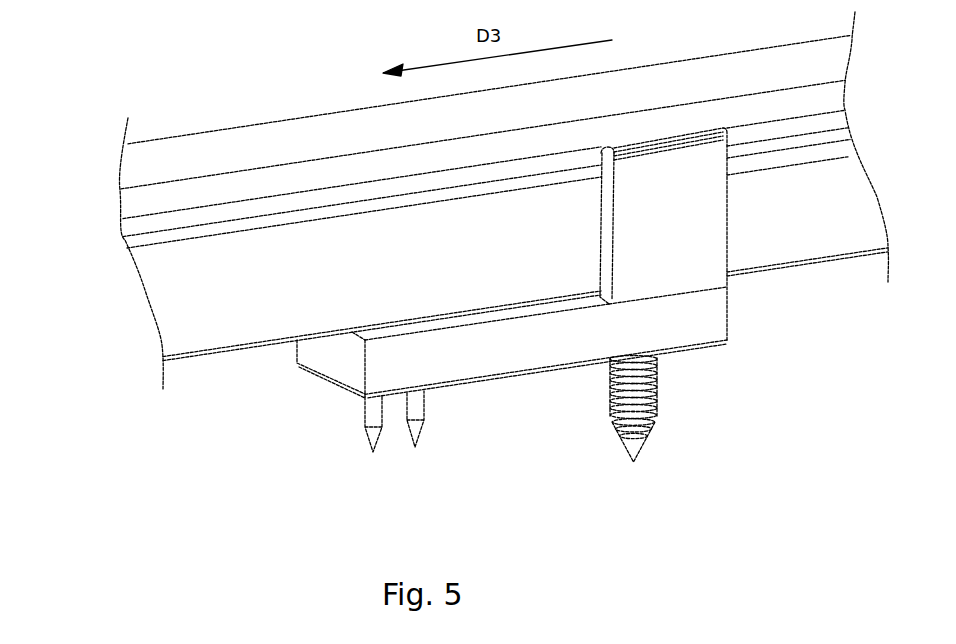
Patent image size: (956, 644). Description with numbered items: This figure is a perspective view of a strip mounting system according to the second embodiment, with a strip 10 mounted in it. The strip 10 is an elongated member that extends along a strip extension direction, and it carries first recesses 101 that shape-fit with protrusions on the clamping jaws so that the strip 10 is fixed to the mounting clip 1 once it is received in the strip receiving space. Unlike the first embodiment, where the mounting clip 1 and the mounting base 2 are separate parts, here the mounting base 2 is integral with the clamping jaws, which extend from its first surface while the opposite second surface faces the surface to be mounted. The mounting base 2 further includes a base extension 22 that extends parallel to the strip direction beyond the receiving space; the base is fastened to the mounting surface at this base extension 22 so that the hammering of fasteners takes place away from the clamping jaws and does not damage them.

The strip 10 is at (193, 289).
The first recess 101 is at (182, 235).
The mounting clip 1 is at (678, 230).
The mounting base 2 is at (680, 315).
The base extension 22 is at (338, 357).